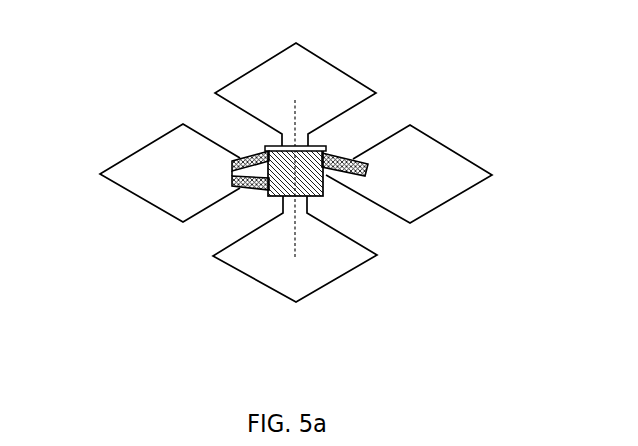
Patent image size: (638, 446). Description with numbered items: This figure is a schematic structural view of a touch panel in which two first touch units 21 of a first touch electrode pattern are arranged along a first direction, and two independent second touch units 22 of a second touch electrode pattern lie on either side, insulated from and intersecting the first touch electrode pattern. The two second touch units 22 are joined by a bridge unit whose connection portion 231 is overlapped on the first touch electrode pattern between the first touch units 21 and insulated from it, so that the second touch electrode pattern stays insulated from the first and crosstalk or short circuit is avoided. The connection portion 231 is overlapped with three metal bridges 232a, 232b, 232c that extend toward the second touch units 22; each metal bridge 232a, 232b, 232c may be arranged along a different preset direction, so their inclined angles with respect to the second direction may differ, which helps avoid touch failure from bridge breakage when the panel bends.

The first touch unit 21 is at (293, 77).
The second touch unit 22 is at (166, 174).
The connection portion 231 is at (329, 180).
The metal bridge 232a is at (252, 156).
The metal bridge 232b is at (345, 155).
The metal bridge 232c is at (248, 193).